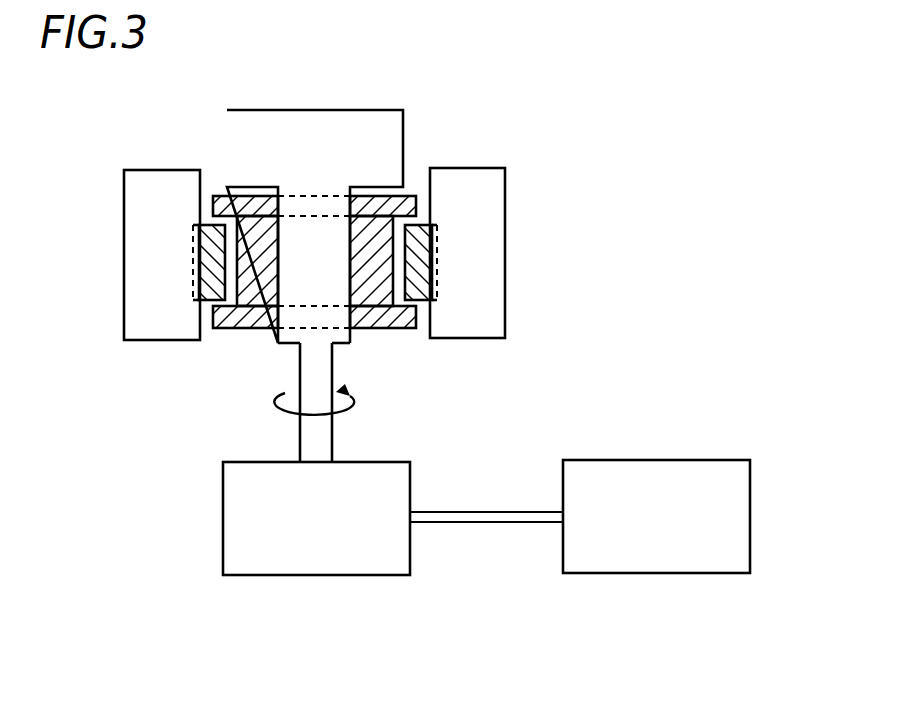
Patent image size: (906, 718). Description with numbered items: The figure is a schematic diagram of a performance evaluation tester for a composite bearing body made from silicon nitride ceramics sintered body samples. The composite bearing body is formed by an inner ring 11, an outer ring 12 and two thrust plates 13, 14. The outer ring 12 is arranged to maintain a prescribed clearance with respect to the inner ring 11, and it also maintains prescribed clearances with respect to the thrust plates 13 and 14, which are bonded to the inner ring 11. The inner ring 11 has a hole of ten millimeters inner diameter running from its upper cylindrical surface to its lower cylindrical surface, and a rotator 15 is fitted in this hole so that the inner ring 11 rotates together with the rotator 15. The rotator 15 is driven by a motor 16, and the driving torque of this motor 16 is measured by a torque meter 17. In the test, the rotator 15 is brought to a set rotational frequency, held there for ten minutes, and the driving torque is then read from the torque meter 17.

The inner ring 11 is at (375, 297).
The outer ring 12 is at (205, 243).
The thrust plate 13 is at (408, 195).
The thrust plate 14 is at (232, 330).
The rotator 15 is at (363, 128).
The motor 16 is at (310, 575).
The torque meter 17 is at (646, 573).